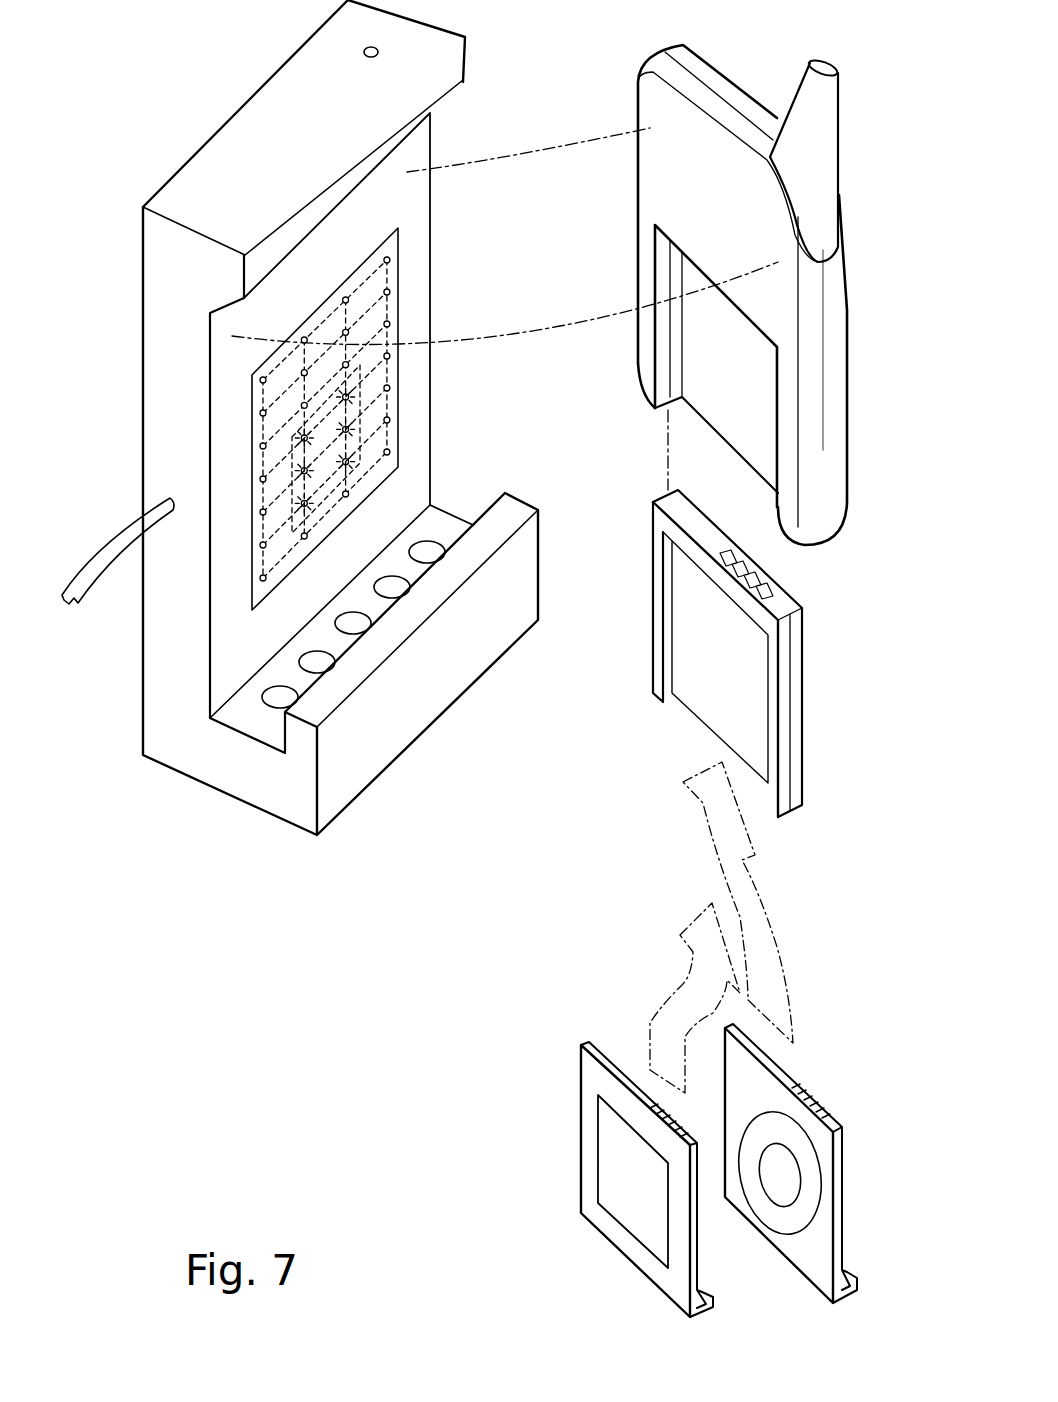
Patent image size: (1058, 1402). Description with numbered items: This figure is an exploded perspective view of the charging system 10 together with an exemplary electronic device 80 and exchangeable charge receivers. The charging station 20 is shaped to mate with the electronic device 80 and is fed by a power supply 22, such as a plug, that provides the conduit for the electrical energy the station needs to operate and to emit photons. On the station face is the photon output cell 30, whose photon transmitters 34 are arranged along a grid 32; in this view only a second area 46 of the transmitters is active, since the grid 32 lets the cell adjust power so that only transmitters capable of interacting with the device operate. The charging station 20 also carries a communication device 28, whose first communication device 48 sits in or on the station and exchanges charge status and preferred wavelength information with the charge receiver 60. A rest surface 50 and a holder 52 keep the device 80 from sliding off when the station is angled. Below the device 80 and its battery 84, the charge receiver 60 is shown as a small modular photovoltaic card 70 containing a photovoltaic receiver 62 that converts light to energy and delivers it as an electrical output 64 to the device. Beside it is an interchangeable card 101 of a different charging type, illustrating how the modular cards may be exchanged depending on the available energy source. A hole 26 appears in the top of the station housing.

The charging system 10 is at (477, 658).
The charging station 20 is at (289, 417).
The power supply 22 is at (92, 577).
The mounting hole 26 is at (378, 53).
The communication device 28 is at (273, 703).
The photon output cell 30 is at (280, 405).
The grid 32 is at (364, 283).
The photon transmitters 34 is at (390, 292).
The second area 46 is at (316, 440).
The first communication device 48 is at (322, 663).
The rest surface 50 is at (272, 742).
The holder 52 is at (324, 703).
The charge receiver 60 is at (597, 1179).
The photovoltaic receiver 62 is at (603, 1172).
The electrical output 64 is at (670, 1127).
The photovoltaic card 70 is at (590, 1073).
The electronic device 80 is at (775, 299).
The battery 84 is at (712, 668).
The card 101 is at (830, 1163).